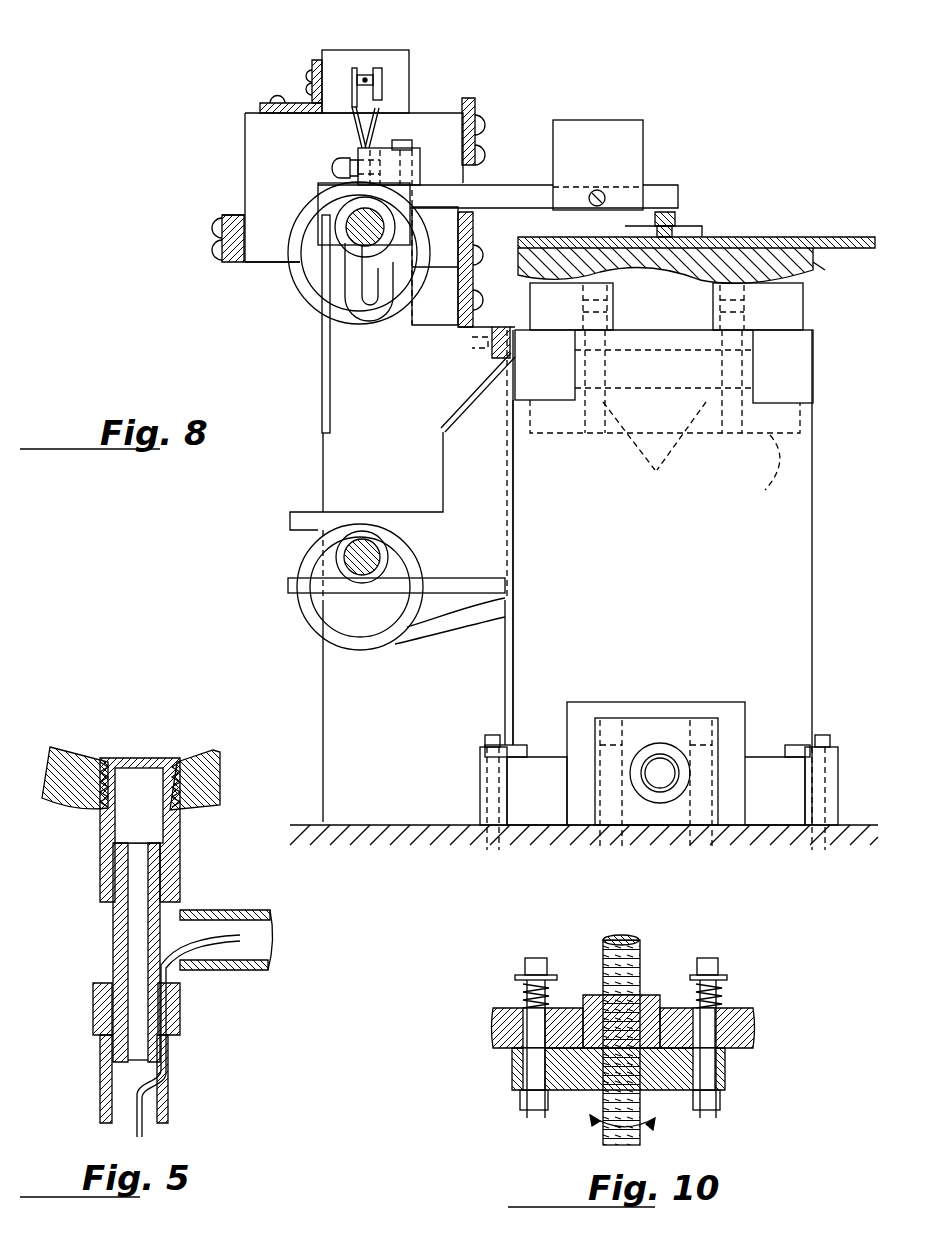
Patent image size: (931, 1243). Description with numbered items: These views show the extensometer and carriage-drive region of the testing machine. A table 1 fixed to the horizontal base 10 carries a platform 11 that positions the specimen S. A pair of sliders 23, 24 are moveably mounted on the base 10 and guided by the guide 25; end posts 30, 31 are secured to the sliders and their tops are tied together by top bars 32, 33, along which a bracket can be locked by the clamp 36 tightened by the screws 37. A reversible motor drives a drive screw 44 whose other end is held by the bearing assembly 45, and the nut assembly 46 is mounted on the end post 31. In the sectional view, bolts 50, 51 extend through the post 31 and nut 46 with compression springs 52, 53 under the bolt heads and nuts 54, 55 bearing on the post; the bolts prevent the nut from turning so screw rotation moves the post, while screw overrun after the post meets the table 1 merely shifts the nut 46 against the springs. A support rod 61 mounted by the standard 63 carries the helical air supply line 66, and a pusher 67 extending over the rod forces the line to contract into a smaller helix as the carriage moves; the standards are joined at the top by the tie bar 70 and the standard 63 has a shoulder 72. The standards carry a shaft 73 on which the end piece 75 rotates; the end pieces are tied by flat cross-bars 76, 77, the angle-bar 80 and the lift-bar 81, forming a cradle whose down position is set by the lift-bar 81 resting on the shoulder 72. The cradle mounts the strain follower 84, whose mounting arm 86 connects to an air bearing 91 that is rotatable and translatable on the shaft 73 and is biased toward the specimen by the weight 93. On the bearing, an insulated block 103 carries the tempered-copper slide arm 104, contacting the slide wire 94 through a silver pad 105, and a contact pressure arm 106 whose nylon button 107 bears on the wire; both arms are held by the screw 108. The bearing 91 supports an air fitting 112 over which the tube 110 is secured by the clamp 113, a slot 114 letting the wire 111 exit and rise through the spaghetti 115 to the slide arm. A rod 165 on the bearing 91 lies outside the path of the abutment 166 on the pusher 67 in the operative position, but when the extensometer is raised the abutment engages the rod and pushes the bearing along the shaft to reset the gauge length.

In FIG. 8, the table 1 is at (813, 262).
In FIG. 8, the base 10 is at (425, 836).
In FIG. 8, the platform 11 is at (838, 246).
In FIG. 8, the slider 23 is at (545, 775).
In FIG. 8, the slider 24 is at (765, 775).
In FIG. 8, the guide 25 is at (833, 760).
In FIG. 8, the end post 30 is at (780, 568).
In FIG. 10, the end post 31 is at (505, 1026).
In FIG. 8, the top bar 32 is at (512, 397).
In FIG. 8, the top bar 33 is at (797, 374).
In FIG. 8, the clamp 36 is at (762, 474).
In FIG. 8, the screws 37 is at (654, 449).
In FIG. 8, the drive screw 44 is at (662, 772).
In FIG. 10, the drive screw 44 is at (618, 940).
In FIG. 8, the bearing assembly 45 is at (660, 723).
In FIG. 10, the nut assembly 46 is at (585, 1076).
In FIG. 10, the bolt 50 is at (537, 960).
In FIG. 10, the bolt 51 is at (710, 963).
In FIG. 10, the compression spring 52 is at (520, 998).
In FIG. 10, the compression spring 53 is at (722, 1003).
In FIG. 10, the nut 54 is at (520, 1101).
In FIG. 10, the nut 55 is at (705, 1101).
In FIG. 8, the support rod 61 is at (340, 552).
In FIG. 8, the standard 63 is at (388, 413).
In FIG. 8, the air supply line 66 is at (305, 612).
In FIG. 8, the pusher 67 is at (432, 536).
In FIG. 8, the tie bar 70 is at (492, 358).
In FIG. 8, the shoulder 72 is at (438, 324).
In FIG. 8, the shaft 73 is at (340, 240).
In FIG. 8, the end piece 75 is at (284, 182).
In FIG. 8, the flat cross-bar 76 is at (215, 250).
In FIG. 8, the flat cross-bar 77 is at (477, 110).
In FIG. 8, the angle-bar 80 is at (270, 102).
In FIG. 8, the lift-bar 81 is at (472, 228).
In FIG. 8, the strain follower 84 is at (680, 218).
In FIG. 8, the mounting arm 86 is at (503, 190).
In FIG. 8, the air bearing 91 is at (350, 248).
In FIG. 5, the air bearing 91 is at (72, 778).
In FIG. 8, the weight 93 is at (596, 133).
In FIG. 8, the slide wire 94 is at (367, 72).
In FIG. 8, the insulated block 103 is at (423, 168).
In FIG. 8, the slide arm 104 is at (378, 120).
In FIG. 8, the silver pad 105 is at (380, 108).
In FIG. 8, the contact pressure arm 106 is at (352, 100).
In FIG. 8, the nylon button 107 is at (361, 72).
In FIG. 8, the screw 108 is at (352, 164).
In FIG. 8, the tube 110 is at (292, 212).
In FIG. 5, the tube 110 is at (103, 1080).
In FIG. 5, the wire 111 is at (137, 1112).
In FIG. 5, the air fitting 112 is at (113, 918).
In FIG. 5, the clamp 113 is at (93, 1006).
In FIG. 5, the slot 114 is at (165, 1003).
In FIG. 5, the spaghetti 115 is at (256, 972).
In FIG. 8, the rod 165 is at (322, 356).
In FIG. 8, the abutment 166 is at (466, 397).
In FIG. 8, the specimen S is at (702, 230).